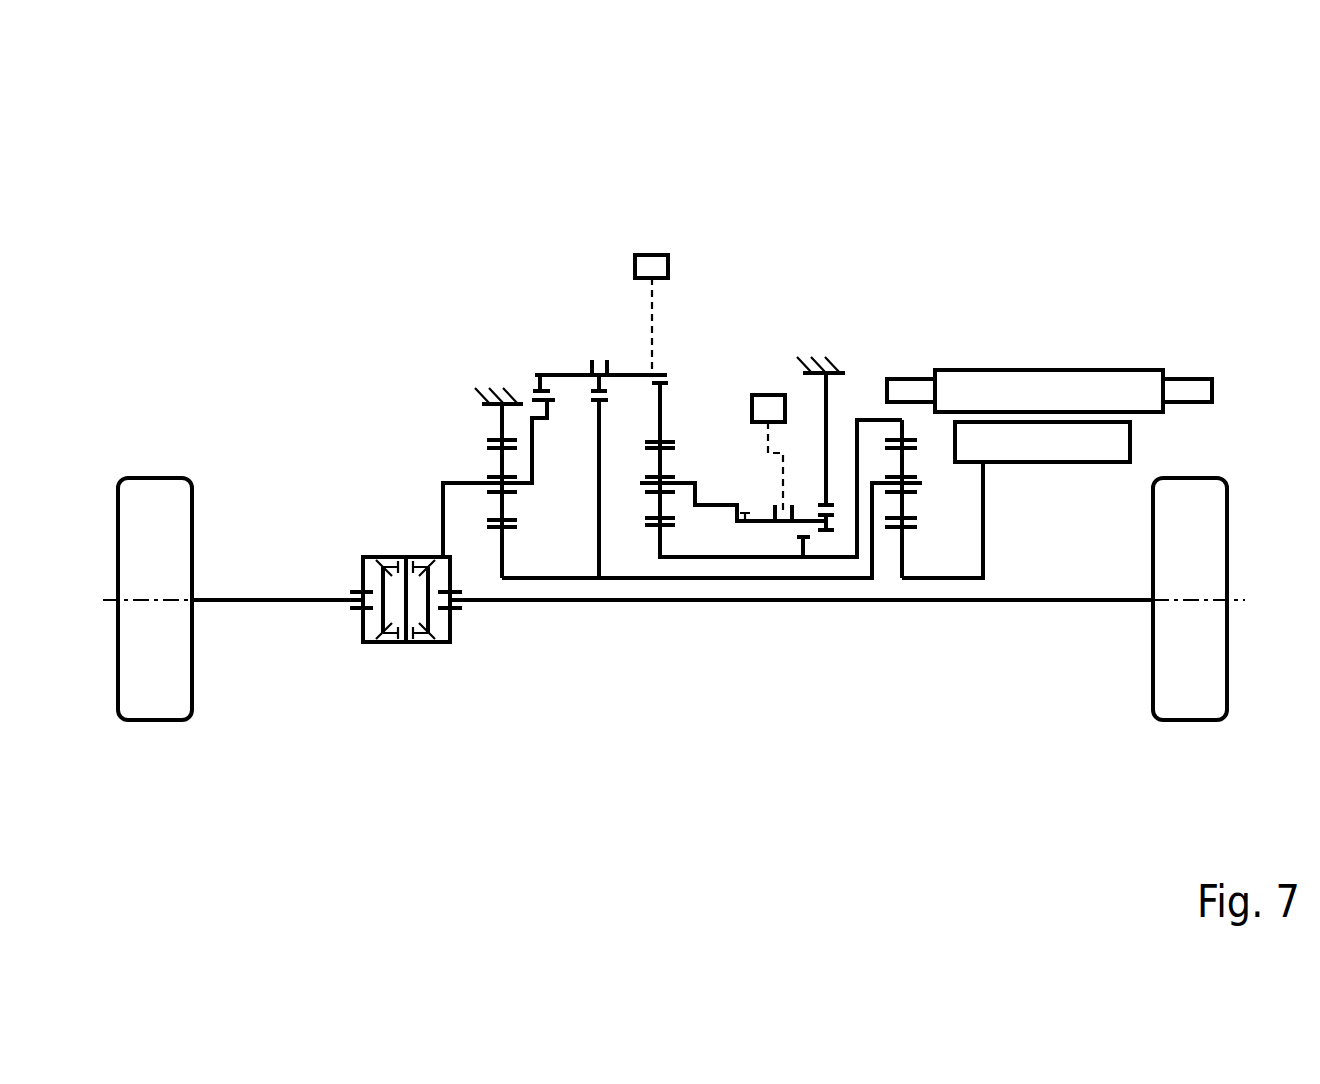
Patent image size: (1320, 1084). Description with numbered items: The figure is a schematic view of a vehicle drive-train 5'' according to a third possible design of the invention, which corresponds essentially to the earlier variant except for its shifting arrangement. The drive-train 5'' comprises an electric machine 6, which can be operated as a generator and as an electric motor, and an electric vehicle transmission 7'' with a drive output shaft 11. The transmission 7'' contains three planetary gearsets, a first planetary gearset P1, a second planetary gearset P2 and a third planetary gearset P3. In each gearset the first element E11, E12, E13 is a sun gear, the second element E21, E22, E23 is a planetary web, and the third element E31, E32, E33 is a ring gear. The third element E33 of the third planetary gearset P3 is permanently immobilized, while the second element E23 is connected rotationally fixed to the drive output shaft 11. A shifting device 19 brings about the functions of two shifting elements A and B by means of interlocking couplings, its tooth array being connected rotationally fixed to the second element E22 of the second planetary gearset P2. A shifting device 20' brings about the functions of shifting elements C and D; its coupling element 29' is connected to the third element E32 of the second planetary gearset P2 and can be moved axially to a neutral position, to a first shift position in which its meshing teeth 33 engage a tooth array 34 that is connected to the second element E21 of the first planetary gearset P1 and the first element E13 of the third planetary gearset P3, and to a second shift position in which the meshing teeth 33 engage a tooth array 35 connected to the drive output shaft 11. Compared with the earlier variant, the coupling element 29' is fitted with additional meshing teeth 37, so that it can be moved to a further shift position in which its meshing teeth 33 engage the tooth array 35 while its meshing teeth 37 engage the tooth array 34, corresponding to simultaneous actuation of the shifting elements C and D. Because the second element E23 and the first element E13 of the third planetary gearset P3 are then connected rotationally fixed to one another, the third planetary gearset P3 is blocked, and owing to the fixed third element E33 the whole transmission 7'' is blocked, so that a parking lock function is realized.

The vehicle drive-train 5'' is at (263, 336).
The electric vehicle transmission 7'' is at (636, 222).
The drive output shaft 11 is at (443, 502).
The second element of the third planetary gearset E23 is at (480, 482).
The third element of the third planetary gearset E33 is at (502, 425).
The meshing teeth 33 is at (537, 383).
The shifting device 20' is at (599, 261).
The shifting element D is at (550, 374).
The shifting element C is at (577, 375).
The meshing teeth 37 is at (612, 376).
The coupling element 29' is at (661, 265).
The third element of the second planetary gearset E32 is at (660, 422).
The shifting element A is at (836, 485).
The third element of the first planetary gearset E31 is at (902, 437).
The electric machine 6 is at (1035, 335).
The third planetary gearset P3 is at (502, 618).
The first element of the third planetary gearset E13 is at (500, 572).
The tooth array 35 is at (547, 405).
The tooth array 34 is at (606, 405).
The second planetary gearset P2 is at (660, 618).
The first element of the second planetary gearset E12 is at (680, 485).
The second element of the second planetary gearset E22 is at (660, 542).
The shifting device 19 is at (787, 543).
The shifting element B is at (816, 545).
The first planetary gearset P1 is at (902, 618).
The first element of the first planetary gearset E11 is at (902, 540).
The second element of the first planetary gearset E21 is at (920, 483).